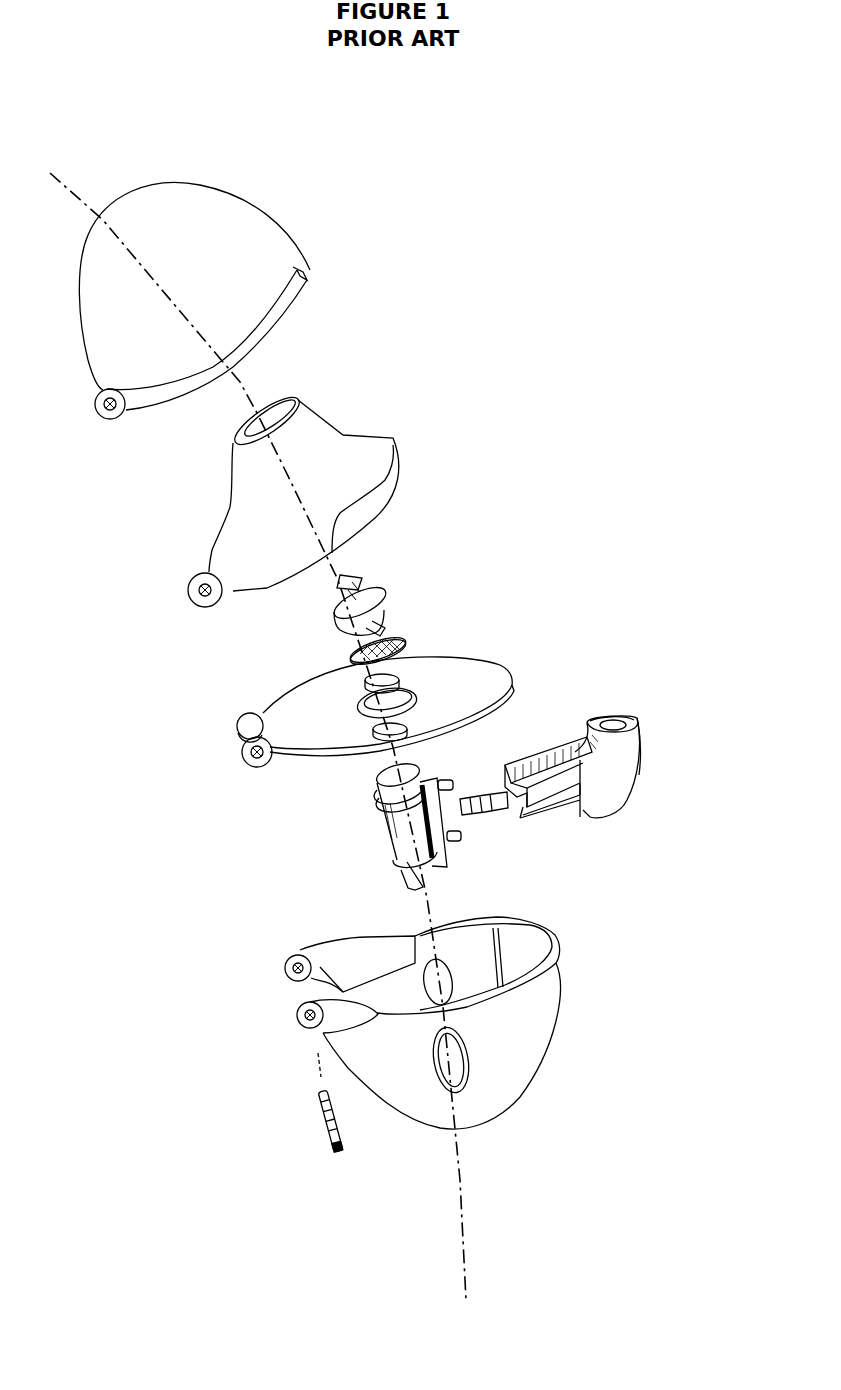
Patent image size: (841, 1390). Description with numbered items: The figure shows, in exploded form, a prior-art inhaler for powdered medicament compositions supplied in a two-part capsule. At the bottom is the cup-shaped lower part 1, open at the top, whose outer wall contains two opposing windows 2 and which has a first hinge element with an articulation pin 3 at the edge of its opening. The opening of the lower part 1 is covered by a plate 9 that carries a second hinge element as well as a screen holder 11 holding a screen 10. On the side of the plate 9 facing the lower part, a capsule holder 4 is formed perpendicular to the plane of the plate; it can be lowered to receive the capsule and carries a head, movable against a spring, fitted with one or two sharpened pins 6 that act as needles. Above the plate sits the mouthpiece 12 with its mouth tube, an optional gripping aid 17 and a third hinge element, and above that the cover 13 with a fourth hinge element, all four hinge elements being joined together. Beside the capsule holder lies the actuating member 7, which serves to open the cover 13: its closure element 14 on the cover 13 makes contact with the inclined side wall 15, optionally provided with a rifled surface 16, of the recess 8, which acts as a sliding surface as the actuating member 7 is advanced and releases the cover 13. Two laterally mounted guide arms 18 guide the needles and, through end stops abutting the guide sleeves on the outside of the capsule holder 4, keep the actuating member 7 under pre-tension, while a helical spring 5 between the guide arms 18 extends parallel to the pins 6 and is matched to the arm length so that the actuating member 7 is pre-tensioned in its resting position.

The lower part 1 is at (563, 1007).
The windows 2 is at (452, 1057).
The articulation pin 3 is at (342, 1155).
The capsule holder 4 is at (428, 860).
The helical spring 5 is at (485, 817).
The sharpened pins 6 is at (562, 820).
The actuating member 7 is at (610, 767).
The recess 8 is at (612, 727).
The plate 9 is at (502, 670).
The screen 10 is at (348, 658).
The screen holder 11 is at (397, 610).
The mouthpiece 12 is at (393, 435).
The cover 13 is at (267, 214).
The closure element 14 is at (310, 272).
The inclined side wall 15 is at (627, 720).
The rifled surface 16 is at (640, 767).
The gripping aid 17 is at (373, 507).
The guide arms 18 is at (550, 782).